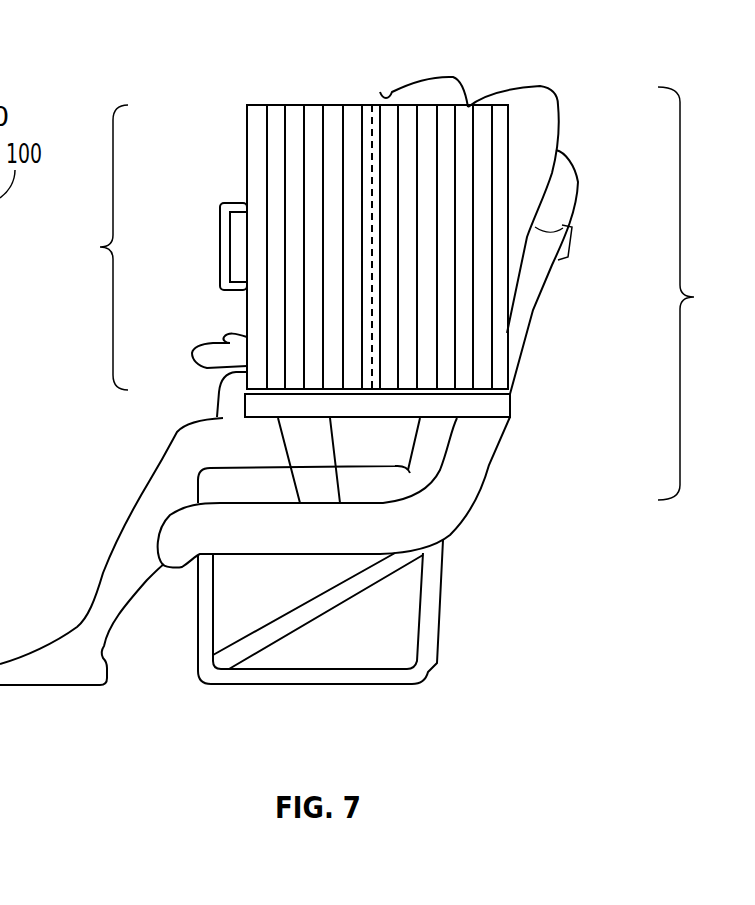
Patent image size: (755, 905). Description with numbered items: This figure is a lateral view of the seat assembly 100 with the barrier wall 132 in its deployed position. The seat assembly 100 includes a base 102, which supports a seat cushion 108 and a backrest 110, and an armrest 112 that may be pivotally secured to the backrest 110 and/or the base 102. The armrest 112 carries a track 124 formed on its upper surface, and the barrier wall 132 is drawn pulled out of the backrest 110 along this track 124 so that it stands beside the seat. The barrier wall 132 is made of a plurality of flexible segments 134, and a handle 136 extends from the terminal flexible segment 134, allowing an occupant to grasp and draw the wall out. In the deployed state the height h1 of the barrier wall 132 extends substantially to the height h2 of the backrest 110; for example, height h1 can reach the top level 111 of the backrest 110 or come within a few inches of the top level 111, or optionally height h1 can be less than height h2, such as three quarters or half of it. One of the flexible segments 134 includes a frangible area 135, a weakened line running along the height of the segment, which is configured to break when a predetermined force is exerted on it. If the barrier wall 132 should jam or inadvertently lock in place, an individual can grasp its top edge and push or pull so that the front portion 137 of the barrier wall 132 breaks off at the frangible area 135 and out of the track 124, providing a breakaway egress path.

The seat assembly 100 is at (377, 365).
The base 102 is at (462, 599).
The seat cushion 108 is at (243, 492).
The backrest 110 is at (550, 123).
The top level 111 is at (538, 90).
The armrest 112 is at (228, 415).
The track 124 is at (372, 389).
The barrier wall 132 is at (287, 103).
The flexible segment 134 is at (315, 111).
The frangible area 135 is at (374, 124).
The handle 136 is at (218, 245).
The front portion 137 is at (355, 256).
The height of the barrier wall h1 is at (95, 247).
The height of the backrest h2 is at (698, 293).